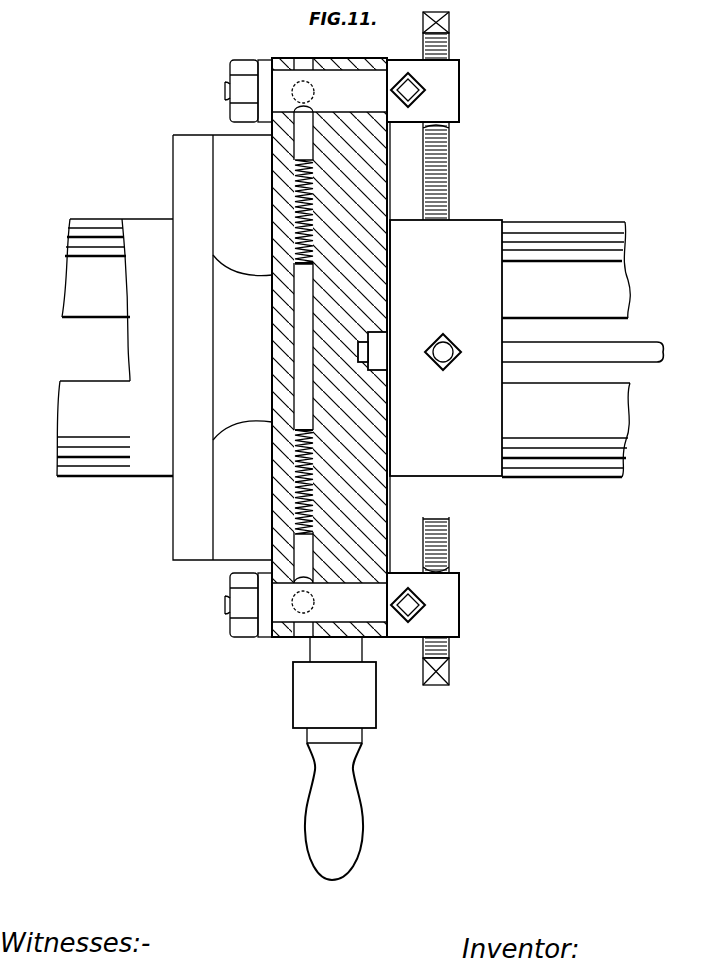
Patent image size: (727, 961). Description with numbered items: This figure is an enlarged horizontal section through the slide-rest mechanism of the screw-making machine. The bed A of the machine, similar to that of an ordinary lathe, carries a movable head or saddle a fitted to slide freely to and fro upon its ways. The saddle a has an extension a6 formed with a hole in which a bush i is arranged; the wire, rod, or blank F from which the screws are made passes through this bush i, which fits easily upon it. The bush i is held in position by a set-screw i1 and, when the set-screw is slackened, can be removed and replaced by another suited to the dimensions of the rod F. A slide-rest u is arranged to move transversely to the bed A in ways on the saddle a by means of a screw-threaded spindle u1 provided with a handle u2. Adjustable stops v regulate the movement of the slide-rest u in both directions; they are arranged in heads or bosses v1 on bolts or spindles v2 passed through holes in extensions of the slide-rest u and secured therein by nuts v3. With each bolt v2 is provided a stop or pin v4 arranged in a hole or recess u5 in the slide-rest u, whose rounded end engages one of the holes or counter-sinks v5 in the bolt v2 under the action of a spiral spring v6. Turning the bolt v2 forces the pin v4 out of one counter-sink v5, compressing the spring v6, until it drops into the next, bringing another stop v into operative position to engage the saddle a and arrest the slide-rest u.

The movable head or saddle a is at (207, 347).
The bed A is at (115, 347).
The slide-rest u is at (329, 347).
The bolt or spindle v2 is at (329, 346).
The nut v3 is at (248, 348).
The stop or pin v4 is at (330, 143).
The hole or counter-sink v5 is at (314, 600).
The spiral spring v6 is at (316, 488).
The hole or recess u5 is at (316, 449).
The head or boss v1 is at (423, 348).
The adjustable stop v is at (449, 548).
The extension of the saddle a6 is at (510, 347).
The wire, rod, or blank F is at (633, 348).
The set-screw i1 is at (445, 335).
The bush i is at (372, 351).
The screw-threaded spindle u1 is at (334, 682).
The handle u2 is at (334, 804).